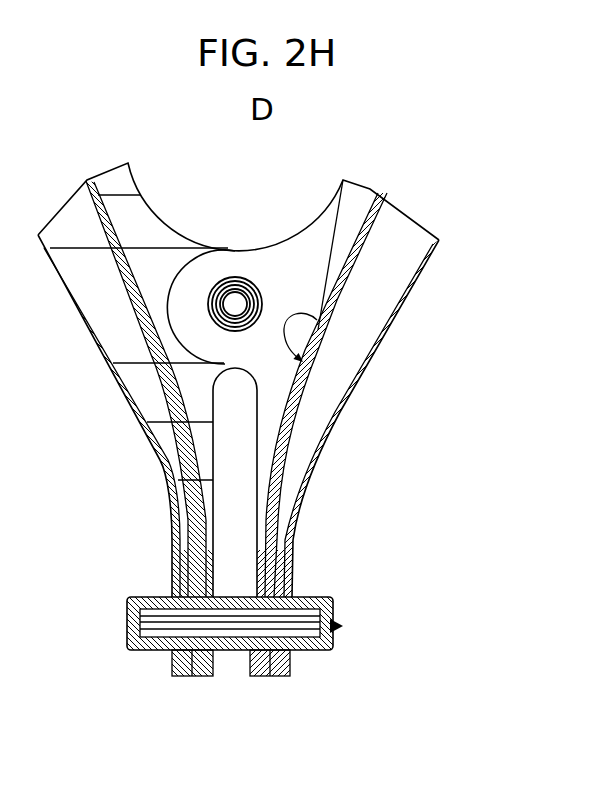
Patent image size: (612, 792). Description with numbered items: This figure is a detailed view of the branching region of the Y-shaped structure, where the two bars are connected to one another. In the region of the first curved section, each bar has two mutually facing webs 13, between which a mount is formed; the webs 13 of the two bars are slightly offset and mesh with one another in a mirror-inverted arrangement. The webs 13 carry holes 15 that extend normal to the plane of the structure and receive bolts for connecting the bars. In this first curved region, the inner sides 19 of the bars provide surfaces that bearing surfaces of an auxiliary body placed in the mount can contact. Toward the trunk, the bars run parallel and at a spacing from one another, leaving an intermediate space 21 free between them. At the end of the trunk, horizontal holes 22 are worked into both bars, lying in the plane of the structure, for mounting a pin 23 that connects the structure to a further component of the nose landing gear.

The webs 13 is at (313, 288).
The holes 15 is at (235, 300).
The inner sides 19 is at (318, 319).
The intermediate space 21 is at (248, 556).
The horizontal holes 22 is at (243, 648).
The pin 23 is at (328, 590).